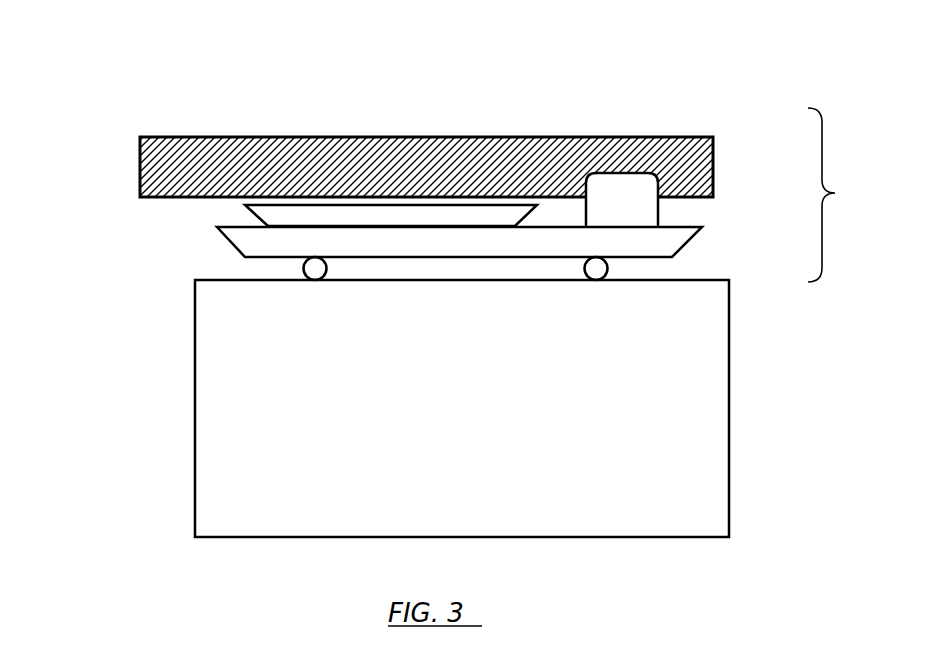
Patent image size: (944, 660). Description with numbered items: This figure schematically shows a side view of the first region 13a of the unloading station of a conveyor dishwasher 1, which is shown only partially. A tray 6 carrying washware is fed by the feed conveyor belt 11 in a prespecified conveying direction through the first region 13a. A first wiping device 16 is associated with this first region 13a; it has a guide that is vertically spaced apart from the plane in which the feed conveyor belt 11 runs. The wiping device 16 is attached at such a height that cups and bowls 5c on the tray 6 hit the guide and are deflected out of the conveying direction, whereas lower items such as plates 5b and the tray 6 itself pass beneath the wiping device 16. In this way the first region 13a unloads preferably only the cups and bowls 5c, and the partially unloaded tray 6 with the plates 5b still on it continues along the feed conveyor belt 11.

The first wiping device 16 is at (289, 148).
The cups and bowls 5c is at (607, 213).
The plates 5b is at (300, 214).
The tray 6 is at (375, 243).
The feed conveyor belt 11 is at (315, 269).
The conveyor dishwasher 1 is at (217, 471).
The first region 13a is at (847, 195).